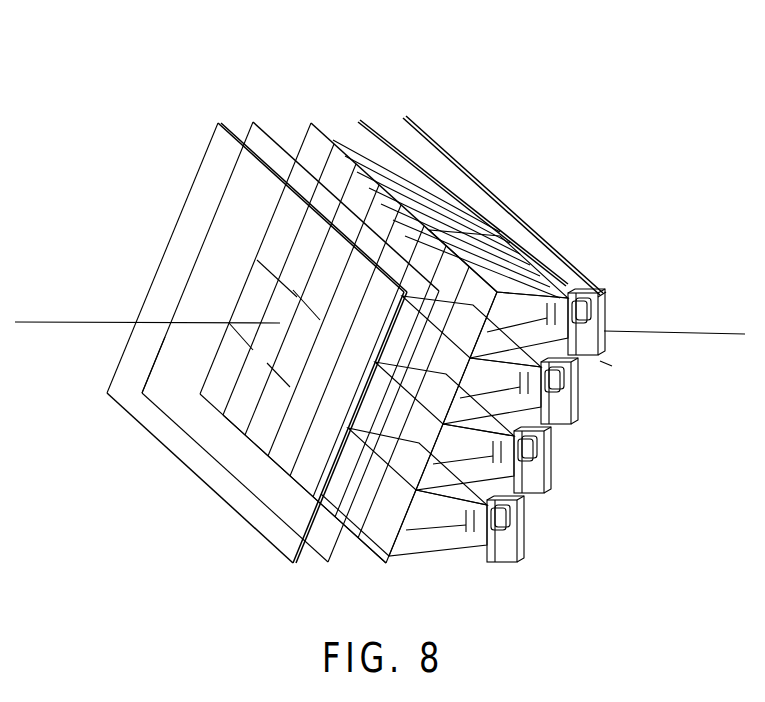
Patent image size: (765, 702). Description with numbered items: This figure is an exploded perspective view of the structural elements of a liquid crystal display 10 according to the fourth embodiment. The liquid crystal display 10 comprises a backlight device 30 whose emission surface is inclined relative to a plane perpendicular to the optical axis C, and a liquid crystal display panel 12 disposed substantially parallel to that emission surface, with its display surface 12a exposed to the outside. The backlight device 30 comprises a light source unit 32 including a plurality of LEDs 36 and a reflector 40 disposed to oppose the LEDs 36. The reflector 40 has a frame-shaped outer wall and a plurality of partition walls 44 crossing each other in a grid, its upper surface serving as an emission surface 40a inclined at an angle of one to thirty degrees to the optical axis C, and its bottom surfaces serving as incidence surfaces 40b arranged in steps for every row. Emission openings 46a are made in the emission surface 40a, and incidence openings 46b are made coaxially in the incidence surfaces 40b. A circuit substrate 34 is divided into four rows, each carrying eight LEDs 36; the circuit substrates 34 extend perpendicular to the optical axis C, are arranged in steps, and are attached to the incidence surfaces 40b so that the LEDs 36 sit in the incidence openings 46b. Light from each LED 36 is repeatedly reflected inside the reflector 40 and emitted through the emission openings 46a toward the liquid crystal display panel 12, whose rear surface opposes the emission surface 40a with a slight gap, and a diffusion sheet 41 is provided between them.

The liquid crystal display 10 is at (214, 106).
The liquid crystal display panel 12 is at (198, 181).
The display surface 12a is at (146, 363).
The backlight device 30 is at (389, 96).
The light source unit 32 is at (604, 362).
The circuit substrate 34 is at (555, 252).
The LED 36 is at (478, 195).
The reflector 40 is at (368, 136).
The emission surface 40a is at (393, 557).
The incidence surface 40b is at (606, 337).
The diffusion sheet 41 is at (266, 126).
The partition wall 44 is at (418, 130).
The emission opening 46a is at (438, 170).
The incidence opening 46b is at (574, 286).
The optical axis C is at (24, 320).